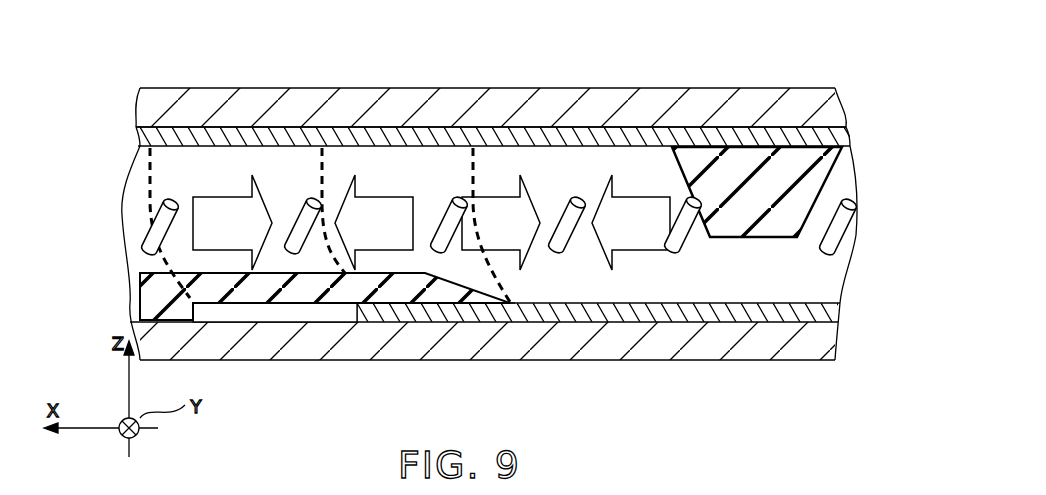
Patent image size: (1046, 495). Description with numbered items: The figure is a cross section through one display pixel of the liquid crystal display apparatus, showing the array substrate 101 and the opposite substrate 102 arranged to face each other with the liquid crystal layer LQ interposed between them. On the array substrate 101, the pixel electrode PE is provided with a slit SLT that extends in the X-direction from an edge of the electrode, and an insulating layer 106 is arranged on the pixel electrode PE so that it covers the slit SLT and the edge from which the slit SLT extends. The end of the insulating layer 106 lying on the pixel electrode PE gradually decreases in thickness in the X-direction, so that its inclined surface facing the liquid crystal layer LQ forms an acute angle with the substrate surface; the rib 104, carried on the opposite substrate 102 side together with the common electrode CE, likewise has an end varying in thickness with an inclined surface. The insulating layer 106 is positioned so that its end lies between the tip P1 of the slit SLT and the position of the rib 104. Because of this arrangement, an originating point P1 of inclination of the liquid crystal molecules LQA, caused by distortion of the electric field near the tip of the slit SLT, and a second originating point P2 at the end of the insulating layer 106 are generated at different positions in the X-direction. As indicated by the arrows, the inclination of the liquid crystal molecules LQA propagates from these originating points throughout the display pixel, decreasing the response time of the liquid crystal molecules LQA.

The array substrate 101 is at (800, 362).
The opposite substrate 102 is at (815, 86).
The rib 104 is at (722, 164).
The insulating layer 106 is at (403, 292).
The common electrode CE is at (505, 137).
The pixel electrode PE is at (670, 313).
The slit SLT is at (270, 313).
The liquid crystal layer LQ is at (168, 173).
The liquid crystal molecules LQA is at (145, 248).
The tip of the slit P1 is at (350, 312).
The end of the insulating layer P2 is at (510, 318).